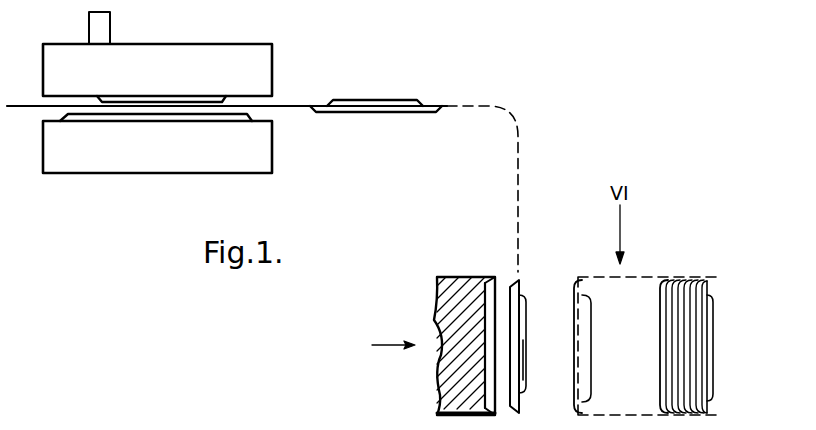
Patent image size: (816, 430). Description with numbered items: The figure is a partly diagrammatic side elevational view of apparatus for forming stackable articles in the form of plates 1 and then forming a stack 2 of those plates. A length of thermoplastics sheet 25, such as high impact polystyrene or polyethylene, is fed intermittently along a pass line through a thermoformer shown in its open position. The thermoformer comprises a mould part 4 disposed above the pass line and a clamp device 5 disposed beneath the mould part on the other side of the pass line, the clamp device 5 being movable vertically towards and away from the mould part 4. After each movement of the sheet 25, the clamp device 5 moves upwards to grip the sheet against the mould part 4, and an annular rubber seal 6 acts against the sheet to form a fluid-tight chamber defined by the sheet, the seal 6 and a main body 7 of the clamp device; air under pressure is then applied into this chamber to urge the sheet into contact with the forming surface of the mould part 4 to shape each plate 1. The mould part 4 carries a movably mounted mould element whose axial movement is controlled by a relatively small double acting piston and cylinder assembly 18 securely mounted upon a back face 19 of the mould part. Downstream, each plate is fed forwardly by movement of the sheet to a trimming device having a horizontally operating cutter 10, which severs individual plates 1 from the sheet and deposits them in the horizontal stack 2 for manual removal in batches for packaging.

The plate 1 is at (393, 100).
The stack 2 is at (676, 266).
The mould part 4 is at (161, 81).
The clamp device 5 is at (103, 173).
The annular rubber seal 6 is at (258, 113).
The main body 7 is at (165, 147).
The cutter 10 is at (452, 276).
The double acting piston and cylinder assembly 18 is at (107, 28).
The back face 19 is at (176, 44).
The thermoplastics sheet 25 is at (300, 105).